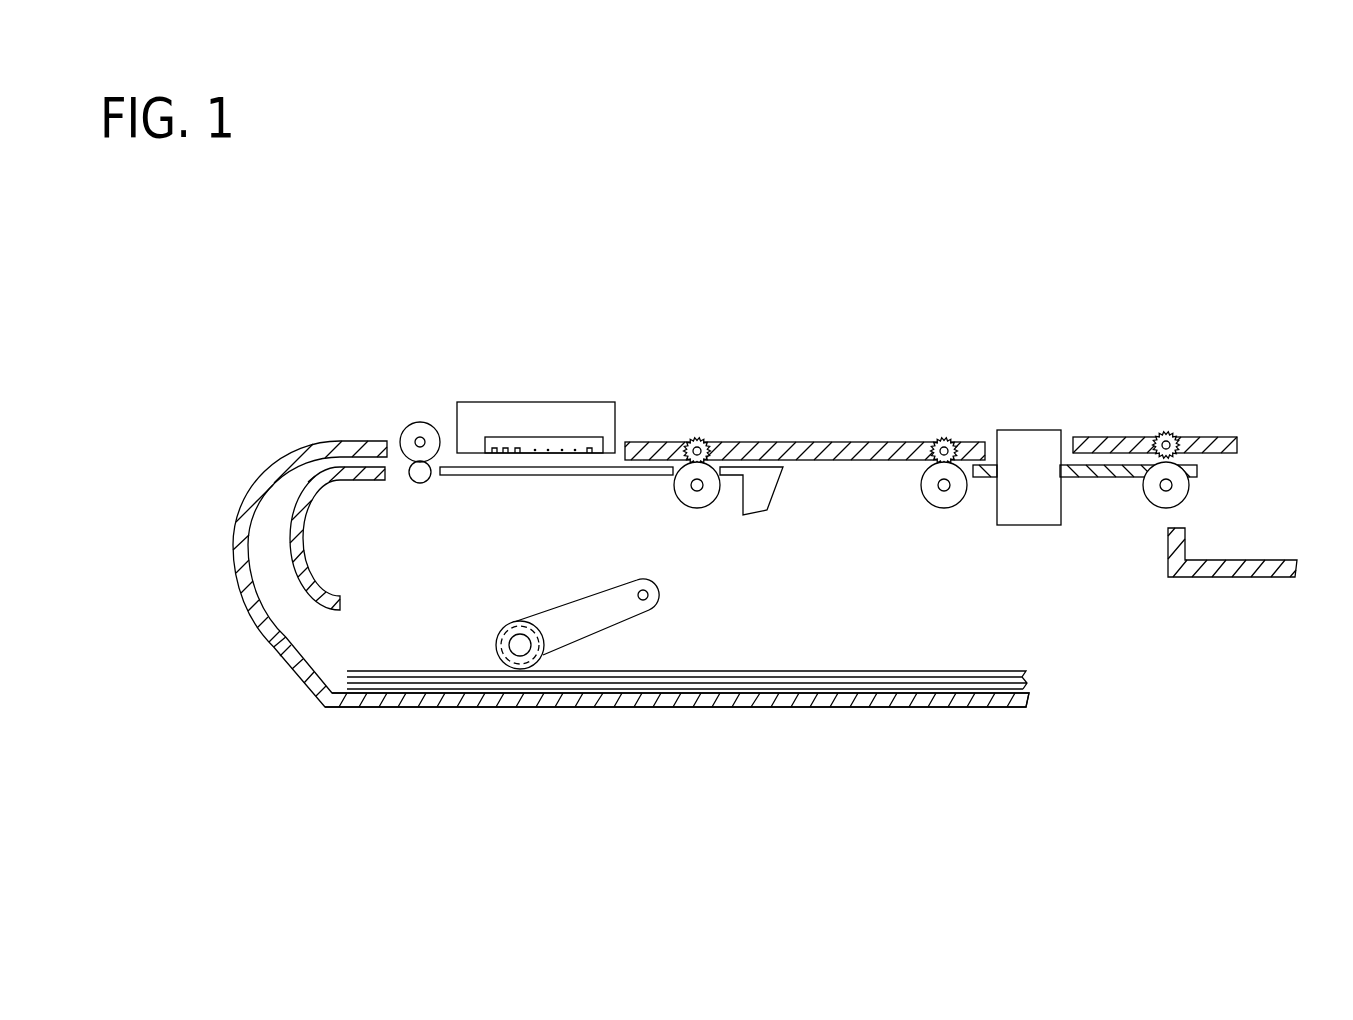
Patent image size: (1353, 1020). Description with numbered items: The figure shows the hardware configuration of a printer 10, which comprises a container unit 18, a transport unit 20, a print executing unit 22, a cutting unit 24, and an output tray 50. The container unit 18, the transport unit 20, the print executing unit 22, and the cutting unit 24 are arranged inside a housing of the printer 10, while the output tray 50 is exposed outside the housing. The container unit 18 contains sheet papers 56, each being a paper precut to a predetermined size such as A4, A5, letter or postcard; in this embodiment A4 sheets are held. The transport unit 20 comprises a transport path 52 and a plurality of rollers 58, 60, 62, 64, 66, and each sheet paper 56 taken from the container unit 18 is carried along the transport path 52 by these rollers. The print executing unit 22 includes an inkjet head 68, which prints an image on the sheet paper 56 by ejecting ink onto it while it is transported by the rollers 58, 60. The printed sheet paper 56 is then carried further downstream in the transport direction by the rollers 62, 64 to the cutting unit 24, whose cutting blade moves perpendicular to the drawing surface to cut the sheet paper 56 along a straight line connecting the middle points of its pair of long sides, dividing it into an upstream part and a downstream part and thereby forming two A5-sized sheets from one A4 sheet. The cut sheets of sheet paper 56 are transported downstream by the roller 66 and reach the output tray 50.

The printer 10 is at (1185, 262).
The container unit 18 is at (661, 707).
The transport unit 20 is at (232, 453).
The print executing unit 22 is at (576, 370).
The cutting unit 24 is at (1035, 429).
The output tray 50 is at (1233, 580).
The transport path 52 is at (233, 555).
The sheet paper 56 is at (901, 671).
The roller 58 is at (500, 652).
The roller 60 is at (423, 422).
The roller 62 is at (698, 437).
The roller 64 is at (948, 437).
The roller 66 is at (1168, 431).
The inkjet head 68 is at (520, 435).